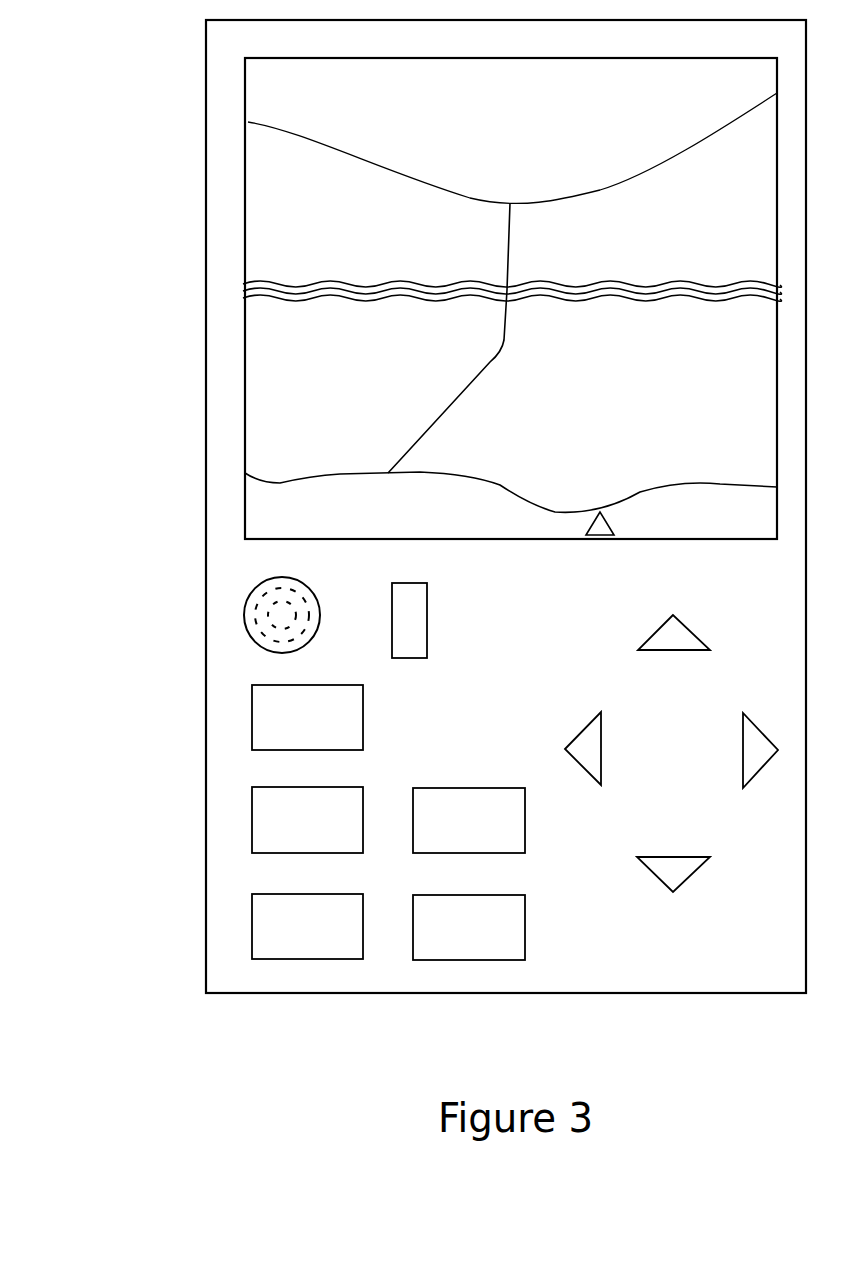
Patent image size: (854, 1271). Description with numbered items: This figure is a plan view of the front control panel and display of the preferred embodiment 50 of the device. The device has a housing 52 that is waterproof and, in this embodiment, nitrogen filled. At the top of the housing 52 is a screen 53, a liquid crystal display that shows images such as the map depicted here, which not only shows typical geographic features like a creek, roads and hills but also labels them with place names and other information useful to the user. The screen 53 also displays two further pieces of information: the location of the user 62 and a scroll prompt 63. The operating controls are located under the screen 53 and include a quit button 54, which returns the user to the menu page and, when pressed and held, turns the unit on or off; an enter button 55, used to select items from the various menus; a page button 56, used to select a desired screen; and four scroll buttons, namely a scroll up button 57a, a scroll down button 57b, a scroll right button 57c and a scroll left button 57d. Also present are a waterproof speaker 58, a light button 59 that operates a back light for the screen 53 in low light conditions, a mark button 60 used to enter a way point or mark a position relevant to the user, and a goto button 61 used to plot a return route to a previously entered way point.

The preferred embodiment 50 is at (130, 466).
The housing 52 is at (196, 378).
The screen 53 is at (298, 218).
The quit button 54 is at (527, 928).
The enter button 55 is at (240, 933).
The page button 56 is at (255, 730).
The scroll up button 57a is at (663, 627).
The scroll down button 57b is at (695, 888).
The scroll right button 57c is at (760, 722).
The scroll left button 57d is at (584, 731).
The speaker 58 is at (240, 617).
The light button 59 is at (432, 598).
The mark button 60 is at (248, 824).
The goto button 61 is at (480, 786).
The location of the user 62 is at (492, 260).
The scroll prompt 63 is at (627, 527).